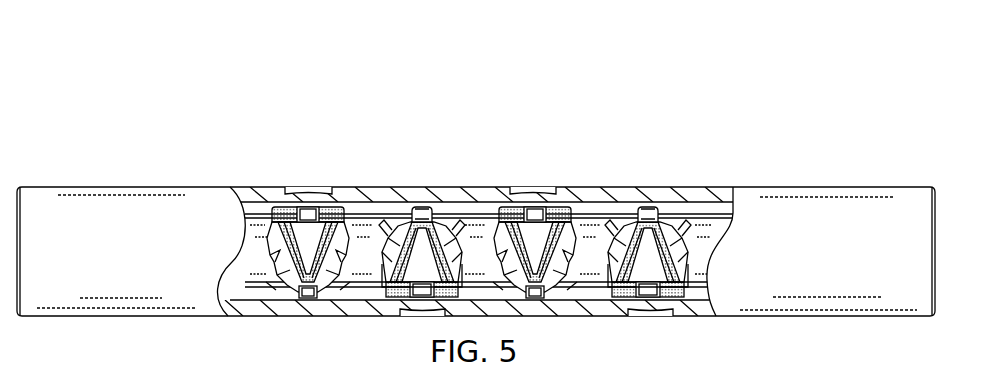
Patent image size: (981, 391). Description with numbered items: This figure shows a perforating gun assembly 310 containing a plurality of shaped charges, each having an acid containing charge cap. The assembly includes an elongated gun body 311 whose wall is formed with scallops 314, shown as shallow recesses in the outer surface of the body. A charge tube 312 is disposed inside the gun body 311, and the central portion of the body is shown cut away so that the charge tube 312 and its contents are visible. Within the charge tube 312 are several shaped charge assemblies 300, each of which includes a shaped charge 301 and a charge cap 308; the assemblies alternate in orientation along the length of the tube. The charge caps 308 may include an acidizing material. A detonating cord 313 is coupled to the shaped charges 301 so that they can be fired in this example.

The shaped charge assembly 300 is at (265, 260).
The shaped charge 301 is at (340, 265).
The charge cap 308 is at (338, 205).
The perforating gun assembly 310 is at (350, 74).
The gun body 311 is at (104, 187).
The charge tube 312 is at (461, 218).
The detonating cord 313 is at (399, 207).
The scallop 314 is at (650, 317).